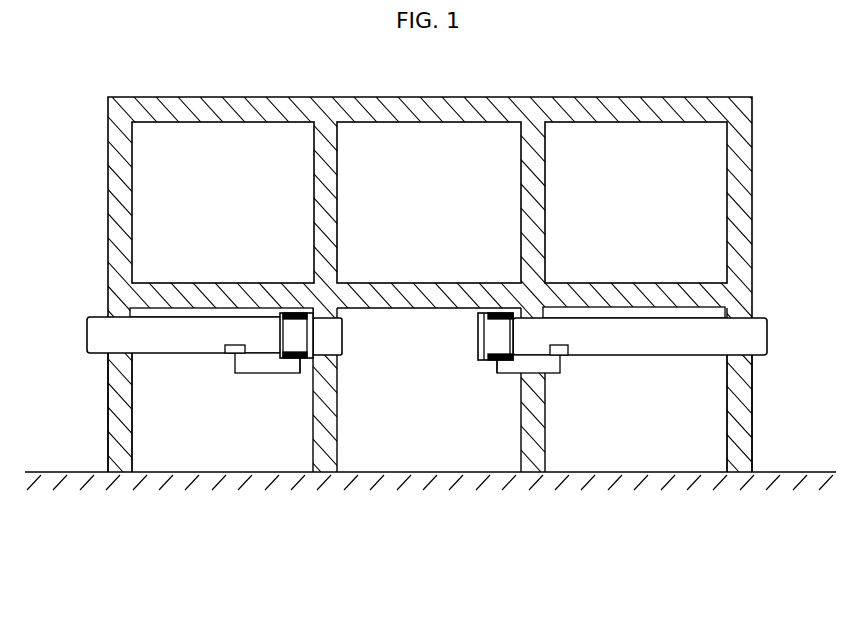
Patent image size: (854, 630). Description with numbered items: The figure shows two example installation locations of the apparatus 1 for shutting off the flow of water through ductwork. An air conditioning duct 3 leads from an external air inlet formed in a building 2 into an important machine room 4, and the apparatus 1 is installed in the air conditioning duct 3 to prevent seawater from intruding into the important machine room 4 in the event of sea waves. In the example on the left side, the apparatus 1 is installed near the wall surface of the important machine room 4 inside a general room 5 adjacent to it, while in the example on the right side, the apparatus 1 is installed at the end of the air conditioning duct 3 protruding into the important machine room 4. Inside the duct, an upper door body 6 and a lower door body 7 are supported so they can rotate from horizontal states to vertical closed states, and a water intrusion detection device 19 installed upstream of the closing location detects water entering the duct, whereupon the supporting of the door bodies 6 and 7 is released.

The apparatus for shutting off the flow of water through ductwork 1 is at (253, 380).
The building 2 is at (758, 141).
The air conditioning duct 3 is at (95, 335).
The important machine room 4 is at (367, 445).
The general room 5 is at (168, 443).
The upper door body 6 is at (303, 310).
The lower door body 7 is at (300, 362).
The water intrusion detection device 19 is at (238, 345).